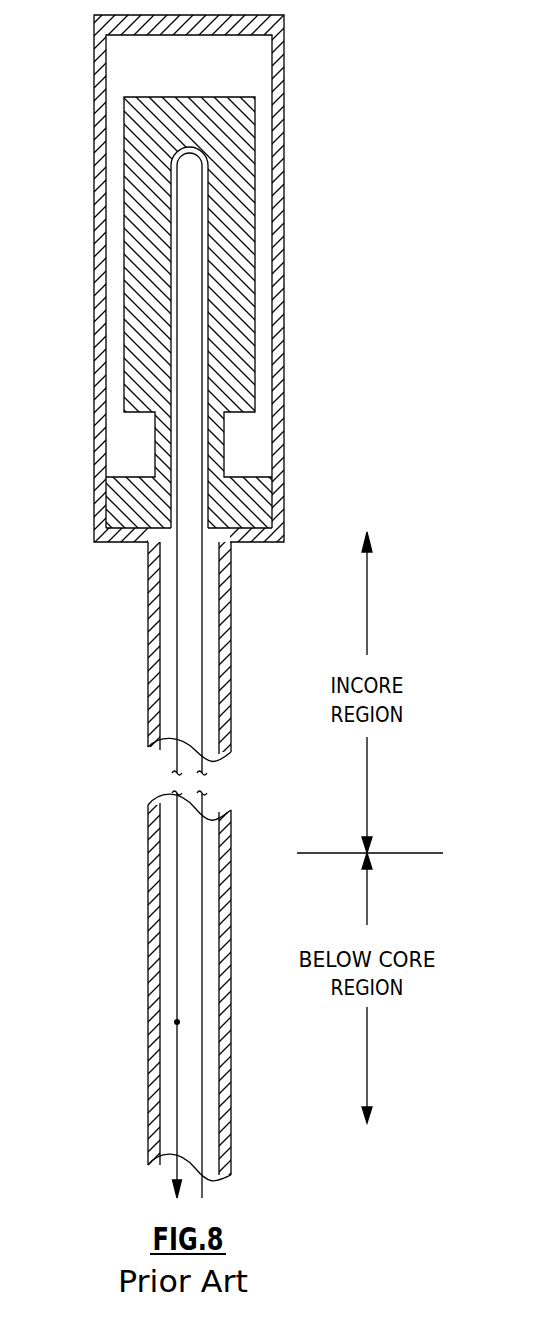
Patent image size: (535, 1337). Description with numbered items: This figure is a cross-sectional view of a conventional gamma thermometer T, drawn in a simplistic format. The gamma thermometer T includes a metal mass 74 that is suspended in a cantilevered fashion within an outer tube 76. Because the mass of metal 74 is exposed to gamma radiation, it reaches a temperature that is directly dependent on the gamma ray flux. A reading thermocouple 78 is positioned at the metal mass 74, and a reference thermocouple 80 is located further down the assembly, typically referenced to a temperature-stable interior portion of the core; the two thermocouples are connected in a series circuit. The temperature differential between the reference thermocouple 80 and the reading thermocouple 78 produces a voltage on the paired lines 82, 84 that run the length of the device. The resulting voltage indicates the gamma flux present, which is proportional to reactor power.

The gamma thermometer T is at (95, 160).
The metal mass 74 is at (136, 395).
The outer tube 76 is at (284, 260).
The reading thermocouple 78 is at (190, 147).
The reference thermocouple 80 is at (176, 1022).
The paired line 82 is at (202, 878).
The paired line 84 is at (176, 877).